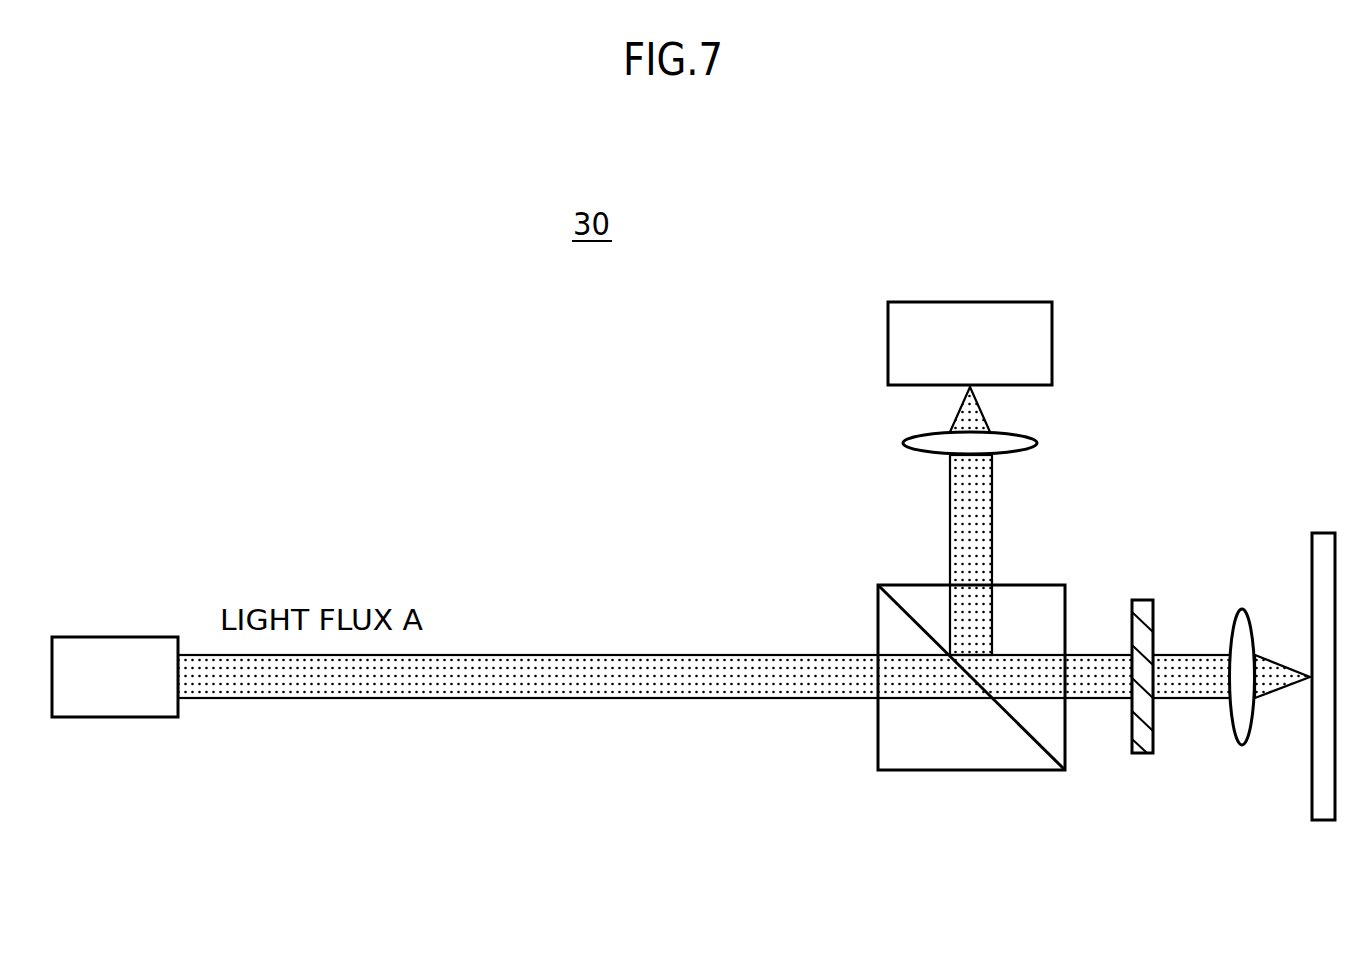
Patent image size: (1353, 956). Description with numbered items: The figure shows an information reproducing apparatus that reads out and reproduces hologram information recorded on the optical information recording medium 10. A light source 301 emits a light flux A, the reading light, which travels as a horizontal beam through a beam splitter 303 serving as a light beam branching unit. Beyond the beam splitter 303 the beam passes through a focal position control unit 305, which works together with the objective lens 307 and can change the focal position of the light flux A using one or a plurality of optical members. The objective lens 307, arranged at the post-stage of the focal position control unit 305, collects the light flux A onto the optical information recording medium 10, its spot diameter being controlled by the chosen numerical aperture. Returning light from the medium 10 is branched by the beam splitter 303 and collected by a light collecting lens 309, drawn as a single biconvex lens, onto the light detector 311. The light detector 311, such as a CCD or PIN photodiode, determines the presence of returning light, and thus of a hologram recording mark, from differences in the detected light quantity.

The light source 301 is at (115, 637).
The beam splitter 303 is at (963, 770).
The focal position control unit 305 is at (1143, 600).
The objective lens 307 is at (1242, 610).
The light collecting lens 309 is at (1038, 434).
The light detector 311 is at (970, 302).
The optical information recording medium 10 is at (1322, 533).